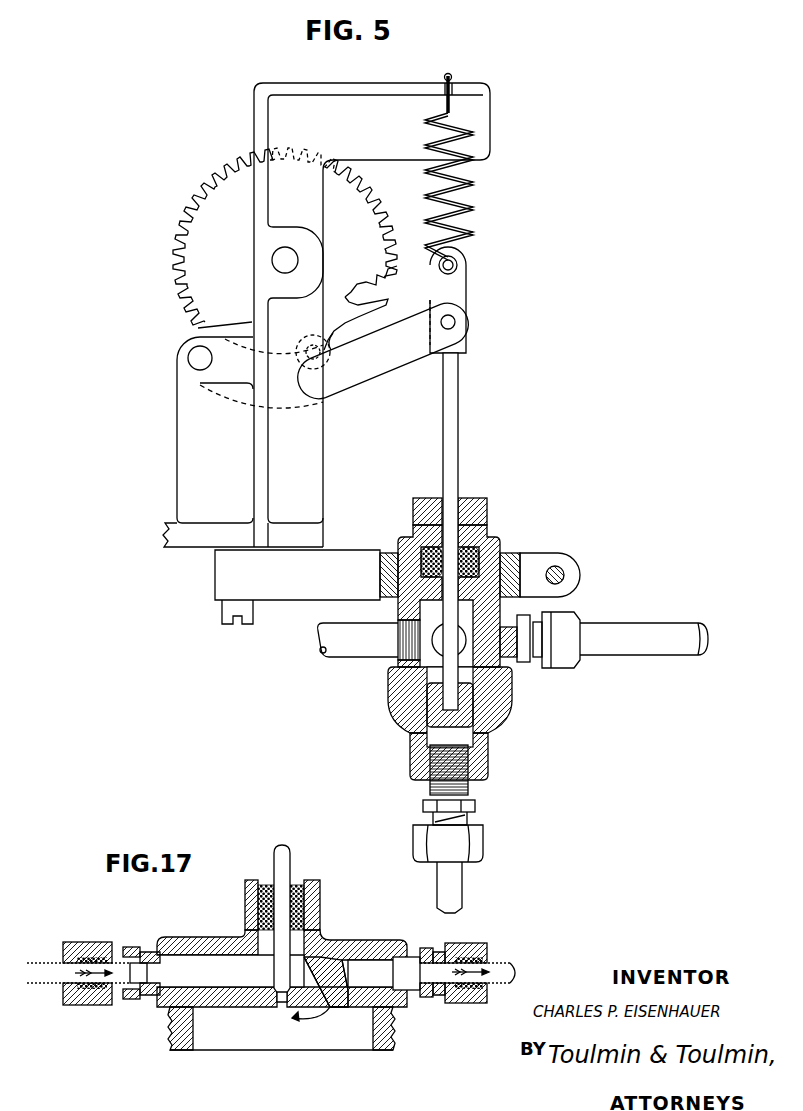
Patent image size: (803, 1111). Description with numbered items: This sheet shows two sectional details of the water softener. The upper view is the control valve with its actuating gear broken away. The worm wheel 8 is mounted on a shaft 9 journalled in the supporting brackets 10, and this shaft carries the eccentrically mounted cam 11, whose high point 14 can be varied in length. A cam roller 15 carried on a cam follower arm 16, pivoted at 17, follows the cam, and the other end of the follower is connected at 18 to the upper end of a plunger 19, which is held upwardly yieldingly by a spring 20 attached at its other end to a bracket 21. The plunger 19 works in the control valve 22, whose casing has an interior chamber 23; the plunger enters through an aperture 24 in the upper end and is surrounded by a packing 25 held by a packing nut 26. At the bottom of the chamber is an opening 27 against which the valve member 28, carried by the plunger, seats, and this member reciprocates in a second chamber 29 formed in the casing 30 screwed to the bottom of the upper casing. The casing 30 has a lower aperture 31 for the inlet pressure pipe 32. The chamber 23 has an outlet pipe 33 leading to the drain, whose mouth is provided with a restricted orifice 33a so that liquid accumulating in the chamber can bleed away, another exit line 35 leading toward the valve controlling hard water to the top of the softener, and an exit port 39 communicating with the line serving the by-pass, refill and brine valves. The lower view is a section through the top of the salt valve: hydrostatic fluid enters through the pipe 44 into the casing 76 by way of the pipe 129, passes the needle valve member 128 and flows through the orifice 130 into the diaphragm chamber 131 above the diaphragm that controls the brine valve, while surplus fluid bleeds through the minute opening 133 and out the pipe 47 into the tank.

In FIG. 5, the worm wheel 8 is at (197, 198).
In FIG. 5, the shaft 9 is at (275, 260).
In FIG. 5, the supporting brackets 10 is at (256, 126).
In FIG. 5, the cam member 11 is at (357, 287).
In FIG. 5, the high point of the cam 14 is at (355, 307).
In FIG. 5, the cam roller 15 is at (335, 333).
In FIG. 5, the cam follower arm 16 is at (377, 367).
In FIG. 5, the pivot 17 is at (188, 358).
In FIG. 5, the connection 18 is at (455, 321).
In FIG. 5, the plunger 19 is at (460, 377).
In FIG. 5, the spring 20 is at (477, 197).
In FIG. 5, the bracket 21 is at (490, 107).
In FIG. 5, the control valve 22 is at (398, 538).
In FIG. 5, the interior chamber 23 is at (432, 665).
In FIG. 5, the aperture 24 is at (390, 582).
In FIG. 5, the packing 25 is at (500, 538).
In FIG. 5, the packing nut 26 is at (485, 498).
In FIG. 5, the opening 27 is at (510, 678).
In FIG. 5, the valve member 28 is at (478, 733).
In FIG. 5, the second chamber 29 is at (470, 745).
In FIG. 5, the casing 30 is at (412, 750).
In FIG. 5, the lower aperture 31 is at (412, 777).
In FIG. 5, the inlet pressure pipe 32 is at (437, 872).
In FIG. 5, the outlet pipe 33 is at (623, 650).
In FIG. 5, the restricted orifice 33a is at (544, 615).
In FIG. 5, the exit line 35 is at (323, 656).
In FIG. 5, the exit port 39 is at (400, 615).
In FIG. 17, the pipe 44 is at (43, 987).
In FIG. 17, the pipe 47 is at (500, 962).
In FIG. 17, the casing 76 is at (177, 937).
In FIG. 17, the needle valve member 128 is at (280, 983).
In FIG. 17, the pipe 129 is at (220, 967).
In FIG. 17, the orifice 130 is at (283, 1007).
In FIG. 17, the diaphragm chamber 131 is at (348, 1037).
In FIG. 17, the minute opening 133 is at (345, 968).